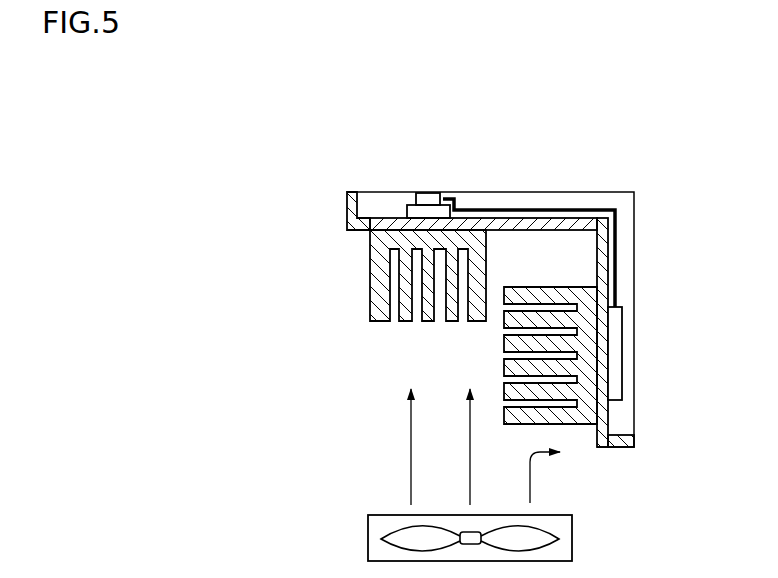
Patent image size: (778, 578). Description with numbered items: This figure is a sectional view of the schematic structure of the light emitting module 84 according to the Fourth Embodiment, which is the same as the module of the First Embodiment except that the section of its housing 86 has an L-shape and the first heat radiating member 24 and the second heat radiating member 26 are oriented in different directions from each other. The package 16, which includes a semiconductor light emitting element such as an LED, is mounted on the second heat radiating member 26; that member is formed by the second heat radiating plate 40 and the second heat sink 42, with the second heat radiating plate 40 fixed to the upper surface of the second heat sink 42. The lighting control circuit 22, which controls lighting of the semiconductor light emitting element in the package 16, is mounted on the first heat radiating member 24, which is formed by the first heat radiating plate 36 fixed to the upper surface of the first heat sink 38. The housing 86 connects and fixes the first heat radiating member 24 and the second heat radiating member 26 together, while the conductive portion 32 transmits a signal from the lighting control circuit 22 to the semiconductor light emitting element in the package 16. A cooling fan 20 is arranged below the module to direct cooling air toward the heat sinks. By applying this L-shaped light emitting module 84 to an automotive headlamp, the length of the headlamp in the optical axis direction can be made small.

The light emitting module 84 is at (550, 158).
The housing 86 is at (347, 205).
The second heat radiating plate 40 is at (387, 223).
The first heat sink 38 is at (583, 281).
The first heat radiating plate 36 is at (605, 412).
The conductive portion 32 is at (608, 208).
The package 16 is at (427, 188).
The second heat radiating member 26 is at (352, 287).
The second heat sink 42 is at (370, 247).
The first heat radiating member 24 is at (556, 273).
The lighting control circuit 22 is at (622, 343).
The cooling fan 20 is at (573, 538).